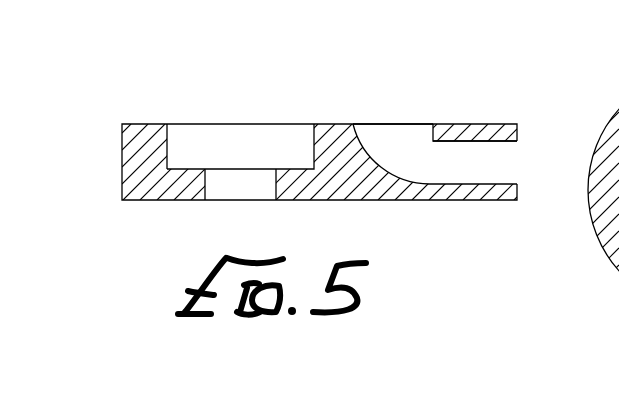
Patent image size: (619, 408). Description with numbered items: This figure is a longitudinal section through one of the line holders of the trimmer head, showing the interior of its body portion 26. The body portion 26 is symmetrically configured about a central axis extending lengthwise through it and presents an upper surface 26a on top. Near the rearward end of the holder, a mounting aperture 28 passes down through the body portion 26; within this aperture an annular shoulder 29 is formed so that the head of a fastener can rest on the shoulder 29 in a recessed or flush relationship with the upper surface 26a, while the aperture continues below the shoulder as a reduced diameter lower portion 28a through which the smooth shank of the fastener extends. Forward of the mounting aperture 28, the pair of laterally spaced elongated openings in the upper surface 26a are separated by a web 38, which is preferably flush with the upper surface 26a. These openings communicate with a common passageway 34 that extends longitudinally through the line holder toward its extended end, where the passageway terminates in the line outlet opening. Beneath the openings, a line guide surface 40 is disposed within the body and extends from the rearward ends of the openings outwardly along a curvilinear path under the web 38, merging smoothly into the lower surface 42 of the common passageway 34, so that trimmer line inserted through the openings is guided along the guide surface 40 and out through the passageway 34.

The body portion 26 is at (415, 200).
The upper surface 26a is at (477, 124).
The mounting aperture 28 is at (167, 135).
The reduced diameter lower portion 28a is at (205, 188).
The annular shoulder 29 is at (189, 169).
The line guide surface 40 is at (398, 127).
The web 38 is at (498, 133).
The common passageway 34 is at (507, 160).
The lower surface 42 is at (497, 182).